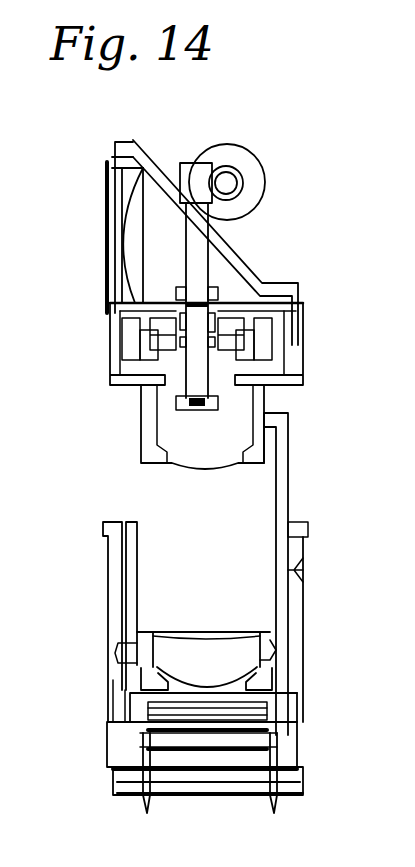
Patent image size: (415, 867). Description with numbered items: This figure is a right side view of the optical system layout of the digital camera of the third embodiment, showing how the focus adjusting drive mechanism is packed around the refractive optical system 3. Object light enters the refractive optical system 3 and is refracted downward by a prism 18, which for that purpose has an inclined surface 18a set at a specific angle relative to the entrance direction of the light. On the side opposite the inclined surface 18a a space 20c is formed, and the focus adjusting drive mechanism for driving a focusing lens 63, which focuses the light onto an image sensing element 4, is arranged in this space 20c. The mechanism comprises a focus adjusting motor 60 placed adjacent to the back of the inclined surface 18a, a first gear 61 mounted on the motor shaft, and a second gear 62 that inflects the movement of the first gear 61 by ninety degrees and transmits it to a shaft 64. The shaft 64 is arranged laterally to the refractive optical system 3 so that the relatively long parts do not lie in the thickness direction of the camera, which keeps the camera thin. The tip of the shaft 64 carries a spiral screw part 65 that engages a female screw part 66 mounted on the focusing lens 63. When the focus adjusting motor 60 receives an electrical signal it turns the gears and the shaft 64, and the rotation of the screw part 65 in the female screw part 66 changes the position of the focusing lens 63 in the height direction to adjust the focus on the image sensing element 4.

The refractive optical system 3 is at (252, 503).
The image sensing element 4 is at (300, 720).
The prism 18 is at (155, 215).
The inclined surface 18a is at (248, 272).
The space 20c is at (168, 147).
The focus adjusting motor 60 is at (252, 170).
The first gear 61 is at (232, 190).
The second gear 62 is at (200, 170).
The focusing lens 63 is at (258, 325).
The shaft 64 is at (196, 258).
The screw part 65 is at (172, 402).
The female screw part 66 is at (125, 318).